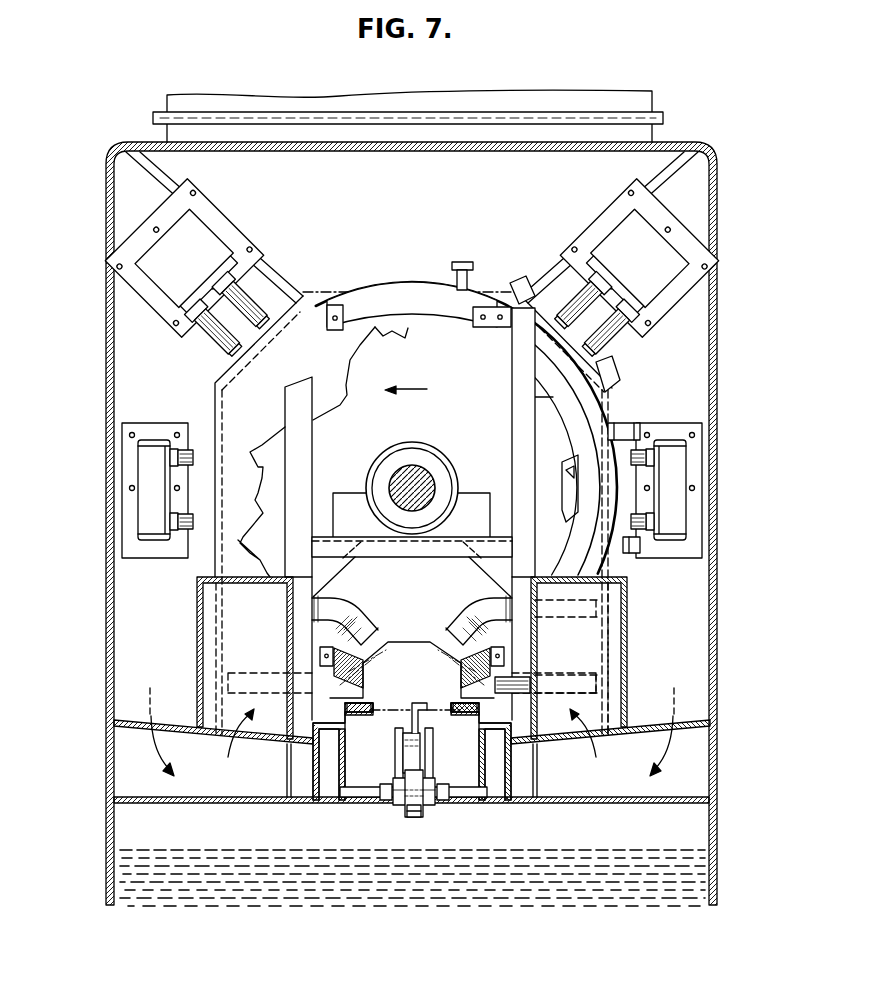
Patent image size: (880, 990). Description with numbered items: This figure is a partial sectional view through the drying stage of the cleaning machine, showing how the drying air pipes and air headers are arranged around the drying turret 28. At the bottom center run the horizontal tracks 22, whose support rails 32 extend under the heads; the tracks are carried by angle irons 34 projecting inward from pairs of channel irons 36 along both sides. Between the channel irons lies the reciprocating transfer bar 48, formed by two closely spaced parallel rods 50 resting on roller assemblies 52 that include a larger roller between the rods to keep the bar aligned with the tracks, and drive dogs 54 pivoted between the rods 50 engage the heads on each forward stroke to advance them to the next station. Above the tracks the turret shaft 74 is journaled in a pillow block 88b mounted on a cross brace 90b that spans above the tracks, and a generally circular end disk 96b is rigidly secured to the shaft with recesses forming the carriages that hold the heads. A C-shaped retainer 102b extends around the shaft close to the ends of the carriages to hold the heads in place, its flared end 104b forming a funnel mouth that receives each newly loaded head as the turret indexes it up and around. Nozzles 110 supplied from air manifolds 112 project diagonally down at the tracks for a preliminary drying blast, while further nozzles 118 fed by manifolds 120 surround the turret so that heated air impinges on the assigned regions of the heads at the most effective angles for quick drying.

The drying turret 28 is at (390, 240).
The tracks 22 is at (492, 722).
The support rails 32 is at (354, 715).
The angle irons 34 is at (485, 758).
The channel irons 36 is at (334, 790).
The transfer bar 48 is at (394, 765).
The rods 50 is at (398, 754).
The roller assemblies 52 is at (416, 809).
The drive dogs 54 is at (429, 756).
The shaft 74 is at (424, 478).
The pillow block 88b is at (347, 498).
The cross brace 90b is at (417, 555).
The end disk 96b is at (360, 362).
The C-shaped retainer 102b is at (464, 316).
The flared end 104b is at (487, 708).
The nozzles 110 is at (447, 628).
The air manifolds 112 is at (212, 639).
The nozzles 118 is at (255, 295).
The manifolds 120 is at (207, 241).